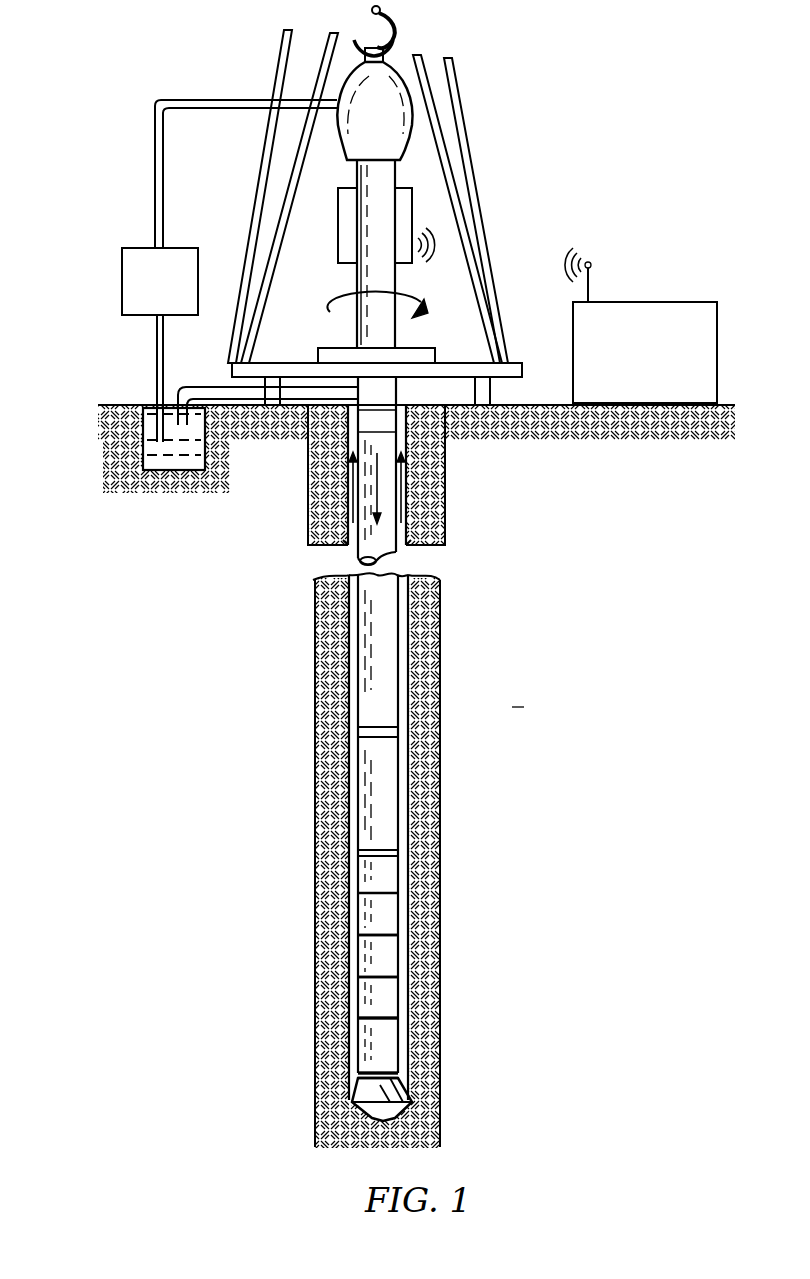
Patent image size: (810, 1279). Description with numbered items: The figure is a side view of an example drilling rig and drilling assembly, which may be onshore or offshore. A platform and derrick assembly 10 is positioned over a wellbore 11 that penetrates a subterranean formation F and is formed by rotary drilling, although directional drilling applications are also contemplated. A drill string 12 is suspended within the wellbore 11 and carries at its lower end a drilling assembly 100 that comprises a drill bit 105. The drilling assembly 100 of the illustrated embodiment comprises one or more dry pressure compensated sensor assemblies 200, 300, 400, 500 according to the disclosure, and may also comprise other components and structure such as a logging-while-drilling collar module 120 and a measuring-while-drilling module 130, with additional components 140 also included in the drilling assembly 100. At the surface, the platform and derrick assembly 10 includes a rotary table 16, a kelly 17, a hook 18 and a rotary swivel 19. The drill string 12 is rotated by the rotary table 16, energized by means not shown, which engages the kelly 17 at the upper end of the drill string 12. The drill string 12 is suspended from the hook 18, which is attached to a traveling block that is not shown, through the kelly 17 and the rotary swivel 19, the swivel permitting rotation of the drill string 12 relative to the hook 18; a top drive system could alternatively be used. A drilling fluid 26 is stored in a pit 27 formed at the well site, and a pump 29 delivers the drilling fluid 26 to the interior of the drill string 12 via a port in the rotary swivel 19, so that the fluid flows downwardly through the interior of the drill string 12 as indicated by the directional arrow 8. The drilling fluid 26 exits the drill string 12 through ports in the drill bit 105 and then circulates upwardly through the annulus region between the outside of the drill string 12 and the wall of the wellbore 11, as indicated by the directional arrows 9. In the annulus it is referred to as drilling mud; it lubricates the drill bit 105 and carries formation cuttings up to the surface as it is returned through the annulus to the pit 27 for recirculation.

The platform and derrick assembly 10 is at (490, 94).
The hook 18 is at (368, 12).
The rotary swivel 19 is at (360, 148).
The kelly 17 is at (368, 336).
The rotary table 16 is at (410, 353).
The drill string 12 is at (370, 400).
The wellbore 11 is at (402, 400).
The directional arrows 9 is at (343, 473).
The directional arrow 8 is at (377, 490).
The pump 29 is at (137, 316).
The pit 27 is at (147, 404).
The drilling fluid 26 is at (178, 462).
The drilling assembly 100 is at (290, 853).
The additional components 140 is at (383, 875).
The logging-while-drilling (LWD) collar module 120 is at (383, 917).
The measuring-while-drilling (MWD) module 130 is at (383, 959).
The dry pressure compensated sensor assembly 200 is at (383, 1045).
The dry pressure compensated sensor assembly 300 is at (378, 1045).
The dry pressure compensated sensor assembly 400 is at (378, 1045).
The dry pressure compensated sensor assembly 500 is at (378, 1045).
The drill bit 105 is at (383, 1093).